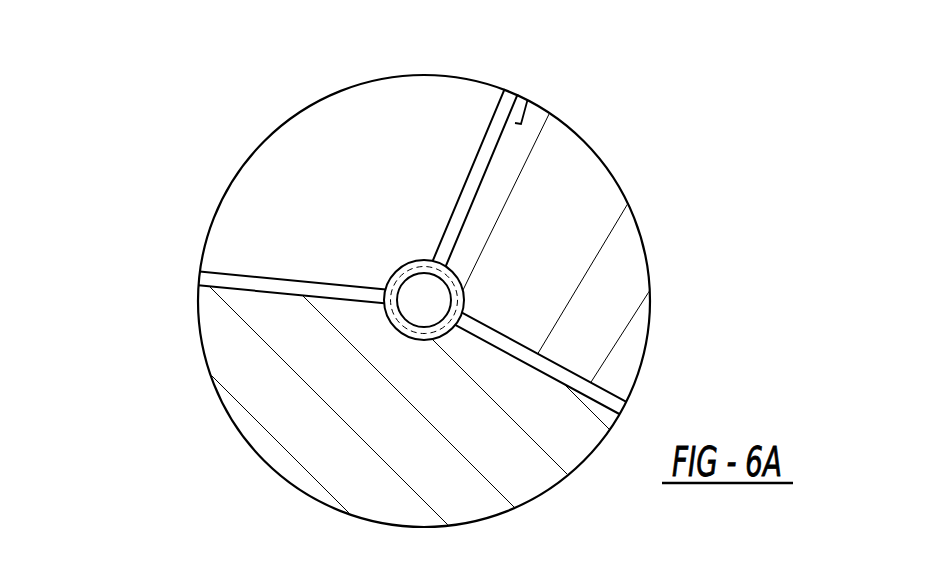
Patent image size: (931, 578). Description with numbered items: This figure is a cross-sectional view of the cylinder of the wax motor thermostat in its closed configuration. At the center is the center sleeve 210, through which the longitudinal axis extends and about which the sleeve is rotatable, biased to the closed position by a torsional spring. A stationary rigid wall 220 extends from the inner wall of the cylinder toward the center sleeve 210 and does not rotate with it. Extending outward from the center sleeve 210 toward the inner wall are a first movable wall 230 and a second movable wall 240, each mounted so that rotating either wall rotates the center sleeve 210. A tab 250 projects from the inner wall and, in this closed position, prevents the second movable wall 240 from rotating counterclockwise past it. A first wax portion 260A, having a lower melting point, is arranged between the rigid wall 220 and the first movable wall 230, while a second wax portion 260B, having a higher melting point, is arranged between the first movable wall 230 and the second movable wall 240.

The center sleeve 210 is at (418, 338).
The rigid wall 220 is at (259, 282).
The first movable wall 230 is at (570, 385).
The second movable wall 240 is at (484, 142).
The tab 250 is at (522, 111).
The first wax portion 260A is at (283, 397).
The second wax portion 260B is at (583, 213).